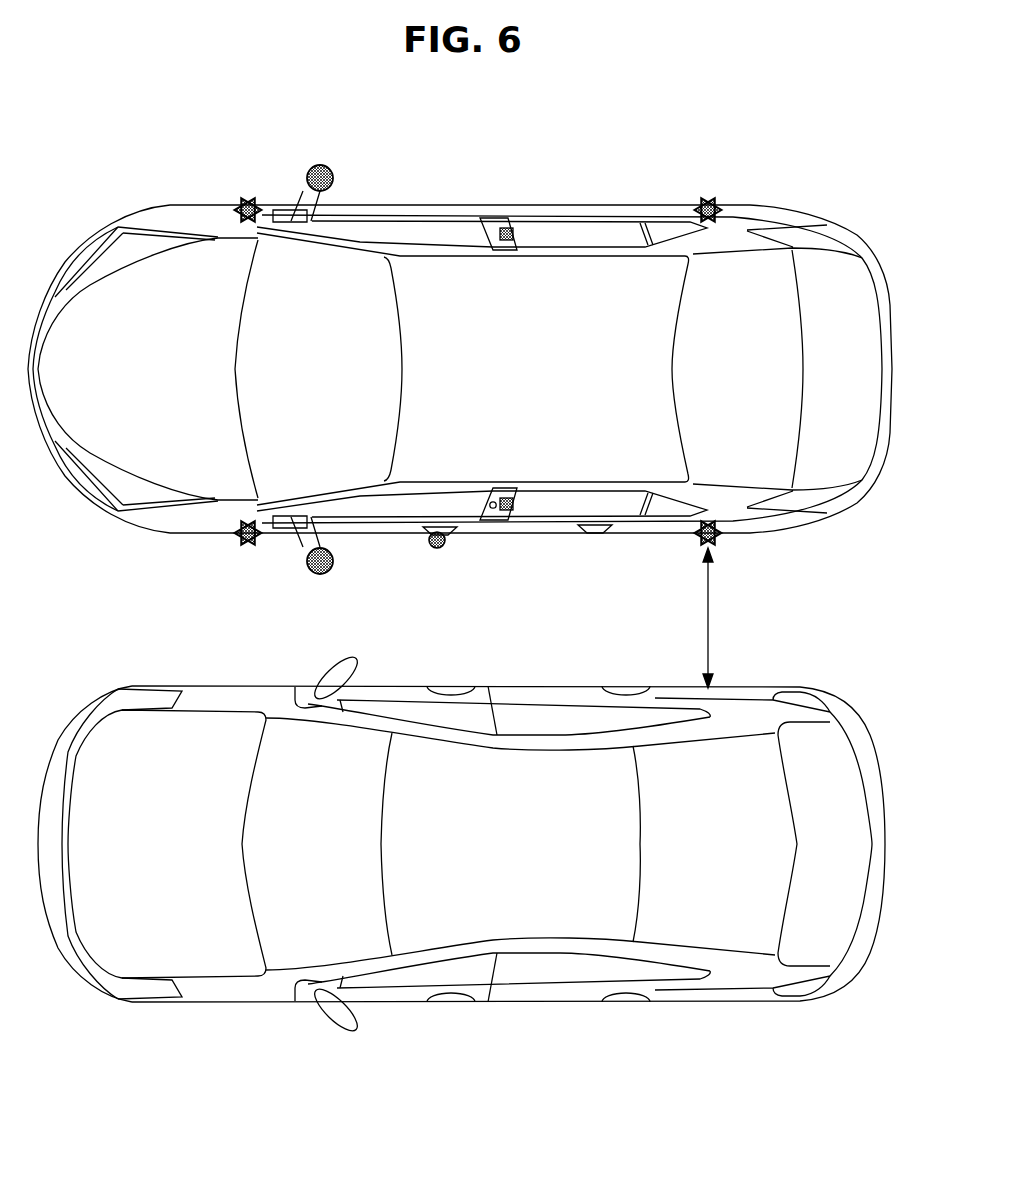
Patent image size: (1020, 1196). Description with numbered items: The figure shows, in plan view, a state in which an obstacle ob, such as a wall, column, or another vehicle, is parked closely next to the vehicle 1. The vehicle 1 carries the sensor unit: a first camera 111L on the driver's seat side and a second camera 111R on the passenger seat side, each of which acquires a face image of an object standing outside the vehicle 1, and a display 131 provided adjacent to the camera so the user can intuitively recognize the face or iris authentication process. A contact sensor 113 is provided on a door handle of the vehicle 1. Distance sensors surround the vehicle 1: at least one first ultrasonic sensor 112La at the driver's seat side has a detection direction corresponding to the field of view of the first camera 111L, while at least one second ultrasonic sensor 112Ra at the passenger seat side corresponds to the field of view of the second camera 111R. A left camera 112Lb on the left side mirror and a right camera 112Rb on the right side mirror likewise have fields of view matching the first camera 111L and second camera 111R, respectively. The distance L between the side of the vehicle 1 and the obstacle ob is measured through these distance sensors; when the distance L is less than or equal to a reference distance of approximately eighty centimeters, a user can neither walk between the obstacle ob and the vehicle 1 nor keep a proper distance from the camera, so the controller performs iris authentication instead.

The vehicle 1 is at (611, 199).
The second camera 111R is at (505, 225).
The first camera 111L is at (505, 515).
The second ultrasonic sensor 112Ra is at (246, 204).
The right camera 112Rb is at (315, 166).
The first ultrasonic sensor 112La is at (245, 547).
The left camera 112Lb is at (319, 580).
The contact sensor 113 is at (435, 549).
The display 131 is at (490, 509).
The distance L is at (716, 618).
The obstacle ob is at (800, 698).